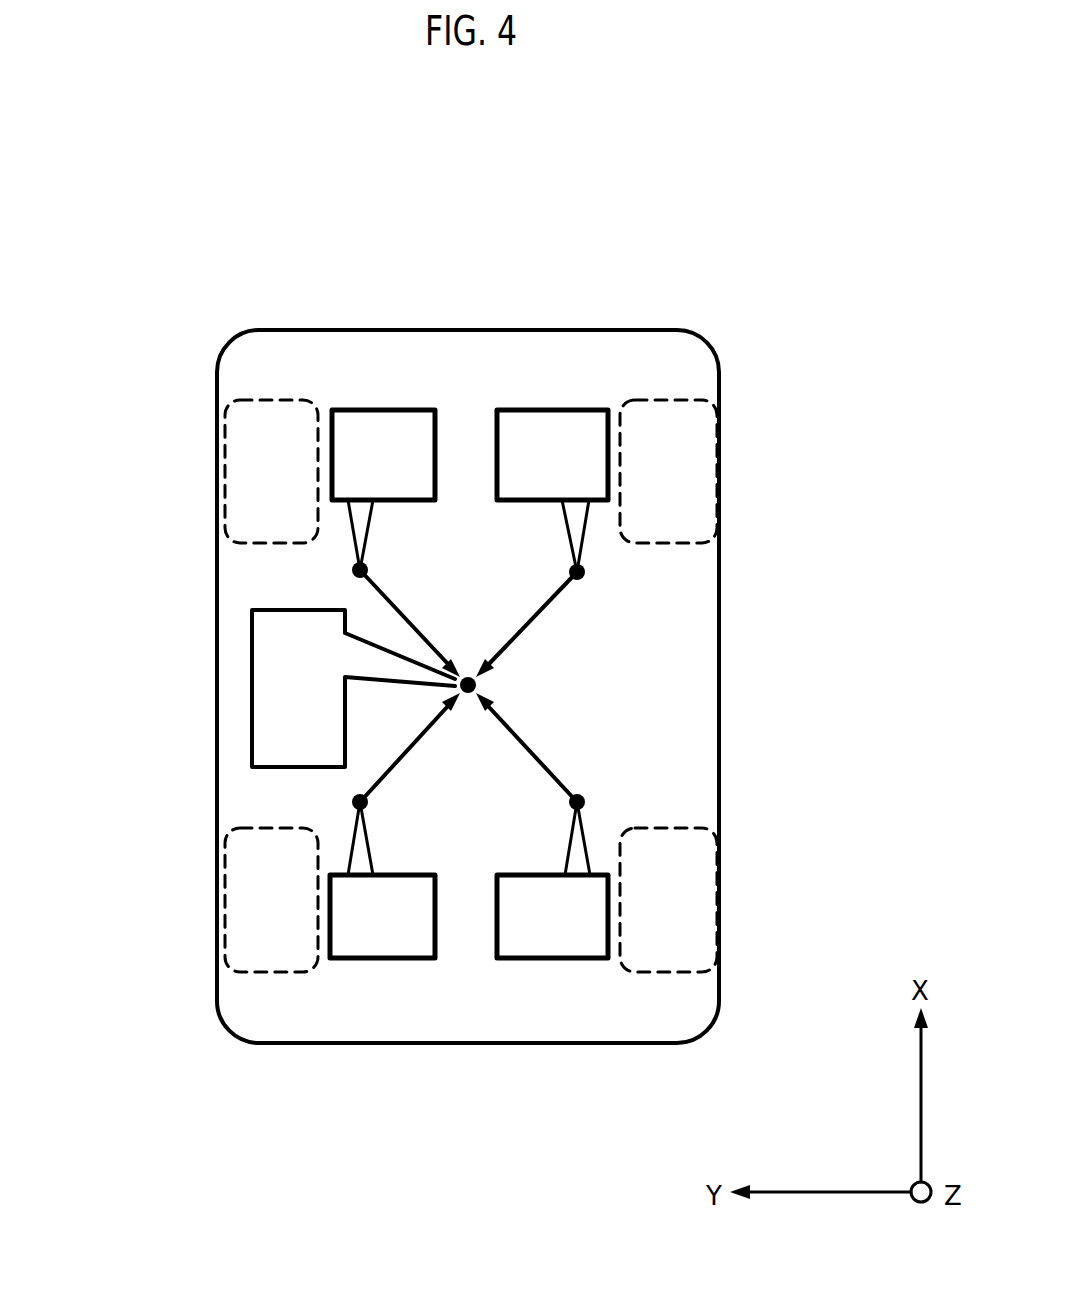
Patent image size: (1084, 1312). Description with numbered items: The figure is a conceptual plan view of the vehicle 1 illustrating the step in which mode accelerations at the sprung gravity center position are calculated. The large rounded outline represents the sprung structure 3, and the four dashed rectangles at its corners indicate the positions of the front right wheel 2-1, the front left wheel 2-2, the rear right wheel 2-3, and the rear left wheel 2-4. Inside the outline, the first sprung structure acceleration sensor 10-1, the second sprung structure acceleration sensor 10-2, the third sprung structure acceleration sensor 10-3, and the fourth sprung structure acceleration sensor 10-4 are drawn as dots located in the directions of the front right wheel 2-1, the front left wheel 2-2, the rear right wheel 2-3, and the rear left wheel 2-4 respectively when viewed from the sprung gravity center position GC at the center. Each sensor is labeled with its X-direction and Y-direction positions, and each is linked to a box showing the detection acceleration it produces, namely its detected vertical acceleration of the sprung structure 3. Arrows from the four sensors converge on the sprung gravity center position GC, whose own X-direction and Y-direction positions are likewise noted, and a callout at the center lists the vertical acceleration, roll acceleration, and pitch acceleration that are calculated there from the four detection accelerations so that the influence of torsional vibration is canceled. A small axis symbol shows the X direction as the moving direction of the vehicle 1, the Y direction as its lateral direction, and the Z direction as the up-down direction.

The vehicle 1 is at (463, 1080).
The sprung structure 3 is at (462, 340).
The front right wheel 2-1 is at (710, 476).
The front left wheel 2-2 is at (226, 476).
The rear right wheel 2-3 is at (710, 901).
The rear left wheel 2-4 is at (226, 901).
The first sprung structure acceleration sensor 10-1 is at (585, 573).
The second sprung structure acceleration sensor 10-2 is at (352, 571).
The third sprung structure acceleration sensor 10-3 is at (585, 803).
The fourth sprung structure acceleration sensor 10-4 is at (352, 802).
The sprung gravity center position GC is at (479, 688).